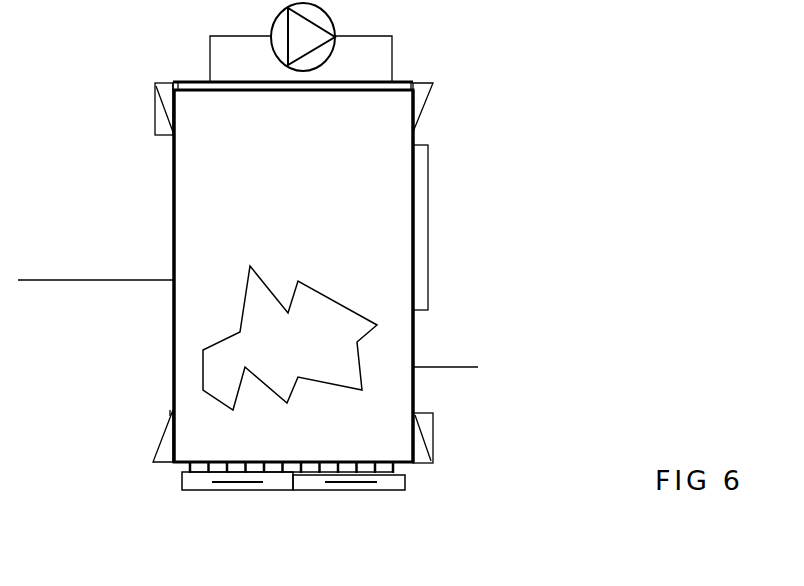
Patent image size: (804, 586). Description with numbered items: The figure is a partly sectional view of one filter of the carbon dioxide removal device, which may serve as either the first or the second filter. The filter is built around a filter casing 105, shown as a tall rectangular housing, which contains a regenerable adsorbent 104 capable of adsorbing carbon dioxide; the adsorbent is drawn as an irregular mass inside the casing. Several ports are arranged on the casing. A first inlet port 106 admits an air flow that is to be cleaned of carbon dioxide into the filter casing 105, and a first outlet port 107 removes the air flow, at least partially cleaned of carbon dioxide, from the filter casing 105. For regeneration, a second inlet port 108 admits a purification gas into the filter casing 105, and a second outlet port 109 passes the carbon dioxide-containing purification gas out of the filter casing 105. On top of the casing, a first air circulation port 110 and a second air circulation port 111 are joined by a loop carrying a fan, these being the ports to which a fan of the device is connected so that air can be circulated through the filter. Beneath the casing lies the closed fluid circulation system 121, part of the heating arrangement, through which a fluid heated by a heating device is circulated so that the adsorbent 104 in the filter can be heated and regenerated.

The regenerable adsorbent 104 is at (313, 347).
The filter casing 105 is at (354, 272).
The first inlet port 106 is at (487, 438).
The first outlet port 107 is at (95, 109).
The second inlet port 108 is at (96, 276).
The second outlet port 109 is at (470, 276).
The first air circulation port 110 is at (209, 44).
The second air circulation port 111 is at (417, 54).
The closed fluid circulation system 121 is at (244, 473).